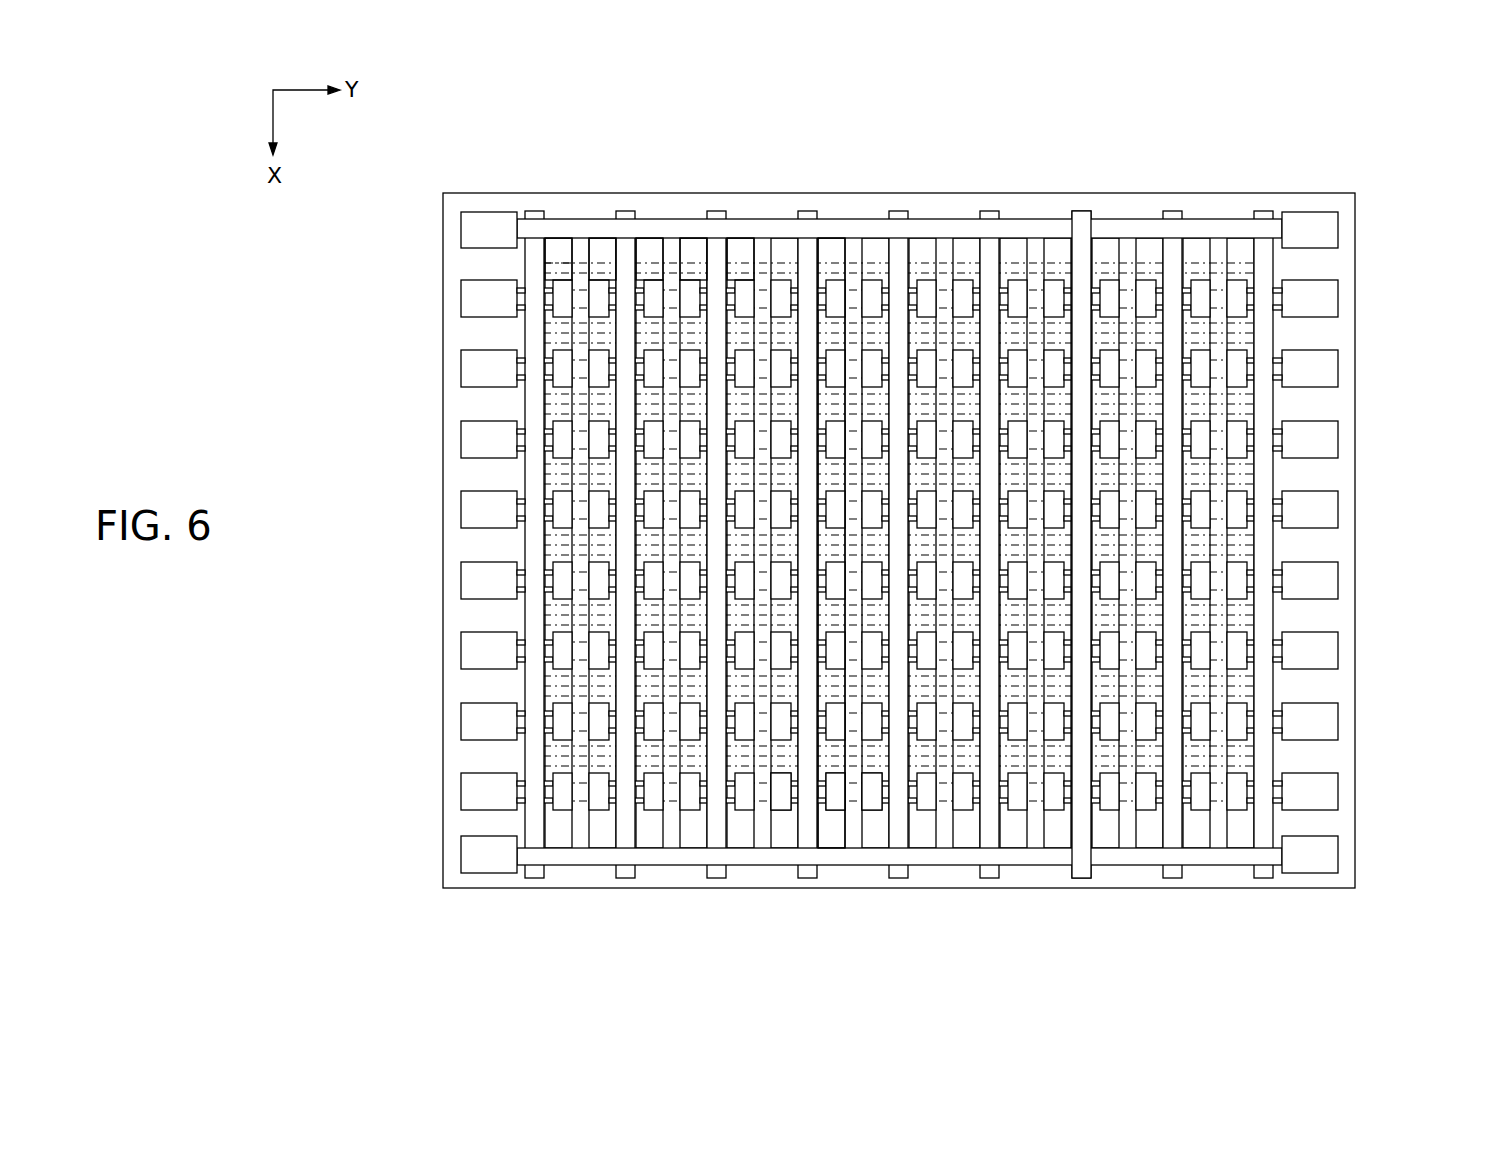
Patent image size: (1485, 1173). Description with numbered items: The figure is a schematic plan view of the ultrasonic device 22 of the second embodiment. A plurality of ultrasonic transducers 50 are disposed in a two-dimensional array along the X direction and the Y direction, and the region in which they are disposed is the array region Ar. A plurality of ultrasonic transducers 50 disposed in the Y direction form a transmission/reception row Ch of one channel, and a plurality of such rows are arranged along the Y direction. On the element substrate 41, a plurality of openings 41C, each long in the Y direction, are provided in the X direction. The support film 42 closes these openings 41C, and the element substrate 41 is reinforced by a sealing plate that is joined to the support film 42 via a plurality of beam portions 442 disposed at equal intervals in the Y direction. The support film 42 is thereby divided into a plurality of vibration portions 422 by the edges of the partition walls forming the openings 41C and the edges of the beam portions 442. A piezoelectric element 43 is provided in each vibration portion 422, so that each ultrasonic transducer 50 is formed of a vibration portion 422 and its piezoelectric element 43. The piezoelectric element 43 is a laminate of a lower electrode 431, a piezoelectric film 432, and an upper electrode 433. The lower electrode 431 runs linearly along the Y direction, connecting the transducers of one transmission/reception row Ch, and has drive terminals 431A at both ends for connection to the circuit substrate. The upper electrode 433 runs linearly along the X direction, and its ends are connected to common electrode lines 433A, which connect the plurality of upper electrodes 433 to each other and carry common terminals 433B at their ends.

The ultrasonic device 22 is at (1352, 166).
The element substrate 41 is at (1000, 193).
The support film 42 is at (1000, 193).
The opening 41C is at (827, 267).
The vibration portion 422 is at (568, 273).
The piezoelectric element 43 is at (937, 935).
The lower electrode 431 is at (818, 790).
The piezoelectric film 432 is at (833, 790).
The upper electrode 433 is at (857, 788).
The drive terminal 431A is at (472, 297).
The common electrode line 433A is at (1127, 218).
The common terminal 433B is at (472, 228).
The beam portion 442 is at (717, 828).
The ultrasonic transducer 50 is at (600, 255).
The transmission/reception row Ch is at (552, 263).
The array region Ar is at (1101, 845).